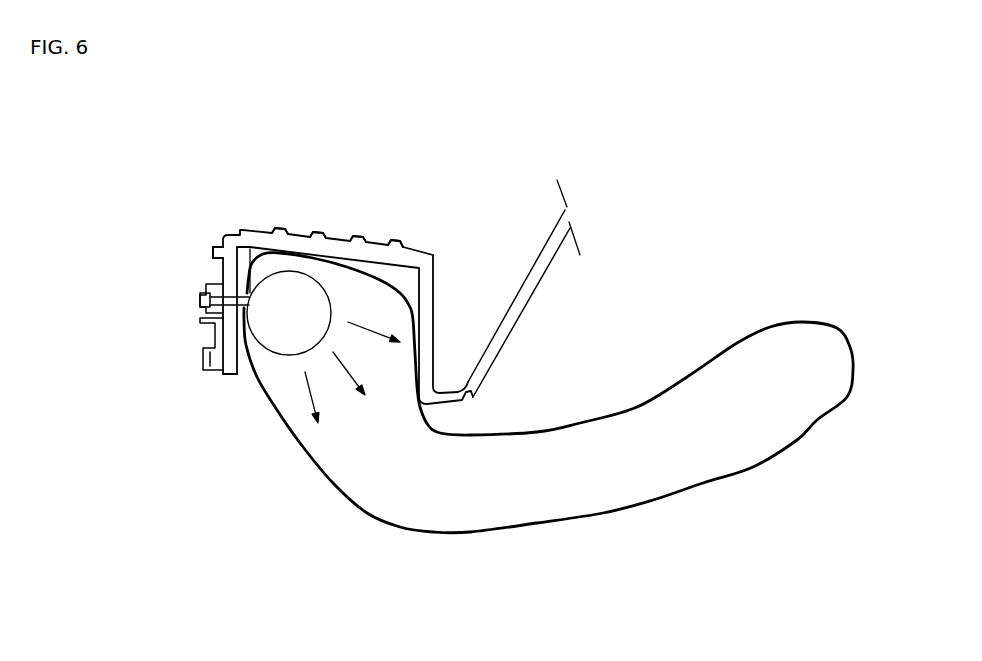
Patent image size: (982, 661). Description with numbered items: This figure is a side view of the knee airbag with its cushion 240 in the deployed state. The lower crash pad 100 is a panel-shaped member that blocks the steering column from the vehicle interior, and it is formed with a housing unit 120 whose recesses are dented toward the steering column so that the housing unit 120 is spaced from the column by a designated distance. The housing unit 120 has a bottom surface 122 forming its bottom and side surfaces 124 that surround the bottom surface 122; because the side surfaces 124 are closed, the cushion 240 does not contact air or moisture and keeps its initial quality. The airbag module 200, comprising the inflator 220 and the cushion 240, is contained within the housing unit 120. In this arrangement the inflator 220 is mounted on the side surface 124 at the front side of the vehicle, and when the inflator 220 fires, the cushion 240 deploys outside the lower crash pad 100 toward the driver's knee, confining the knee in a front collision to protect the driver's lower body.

The lower crash pad 100 is at (538, 209).
The housing unit 120 is at (296, 271).
The bottom surface 122 is at (298, 245).
The side surface 124 is at (240, 268).
The airbag module 200 is at (433, 393).
The inflator 220 is at (203, 314).
The cushion 240 is at (343, 452).